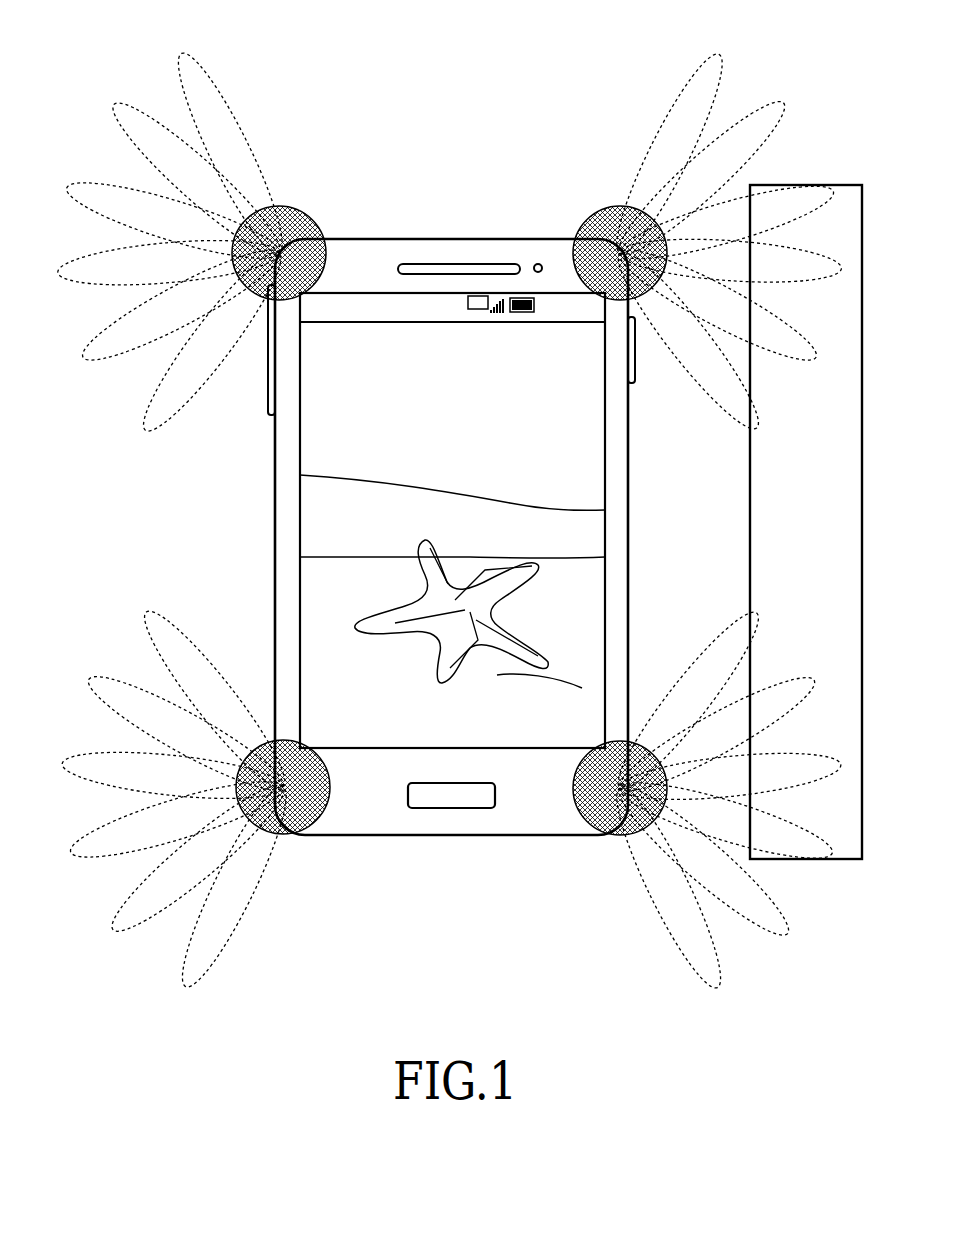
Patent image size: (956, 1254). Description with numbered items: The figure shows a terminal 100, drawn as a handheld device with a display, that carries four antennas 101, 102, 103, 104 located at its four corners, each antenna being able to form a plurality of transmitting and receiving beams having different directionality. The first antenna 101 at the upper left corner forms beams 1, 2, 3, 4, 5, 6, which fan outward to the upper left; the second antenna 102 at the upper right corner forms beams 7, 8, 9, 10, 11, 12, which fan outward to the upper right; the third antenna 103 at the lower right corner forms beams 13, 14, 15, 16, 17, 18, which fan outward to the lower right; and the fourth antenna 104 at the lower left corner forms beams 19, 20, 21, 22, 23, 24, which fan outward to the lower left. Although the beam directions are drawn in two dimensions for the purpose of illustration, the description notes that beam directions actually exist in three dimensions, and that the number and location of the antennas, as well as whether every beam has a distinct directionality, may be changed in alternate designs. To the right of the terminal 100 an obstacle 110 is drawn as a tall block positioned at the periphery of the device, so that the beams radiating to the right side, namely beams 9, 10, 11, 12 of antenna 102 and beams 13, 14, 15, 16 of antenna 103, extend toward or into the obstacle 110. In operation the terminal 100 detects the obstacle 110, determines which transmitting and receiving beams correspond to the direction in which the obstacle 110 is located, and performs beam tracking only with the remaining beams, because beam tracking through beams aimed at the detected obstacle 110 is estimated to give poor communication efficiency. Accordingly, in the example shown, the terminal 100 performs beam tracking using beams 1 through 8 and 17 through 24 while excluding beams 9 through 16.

The terminal 100 is at (628, 425).
The antenna 101 is at (302, 212).
The antenna 102 is at (597, 212).
The antenna 103 is at (600, 830).
The antenna 104 is at (285, 830).
The obstacle 110 is at (806, 522).
The beam 1 is at (212, 341).
The beam 2 is at (181, 305).
The beam 3 is at (168, 262).
The beam 4 is at (173, 220).
The beam 5 is at (197, 179).
The beam 6 is at (230, 153).
The beam 7 is at (669, 153).
The beam 8 is at (701, 177).
The beam 9 is at (726, 223).
The beam 10 is at (731, 260).
The beam 11 is at (718, 305).
The beam 12 is at (688, 341).
The beam 13 is at (688, 701).
The beam 14 is at (717, 734).
The beam 15 is at (730, 776).
The beam 16 is at (726, 820).
The beam 17 is at (704, 861).
The beam 18 is at (668, 887).
The beam 19 is at (234, 886).
The beam 20 is at (198, 858).
The beam 21 is at (177, 819).
The beam 22 is at (172, 775).
The beam 23 is at (186, 733).
The beam 24 is at (215, 700).